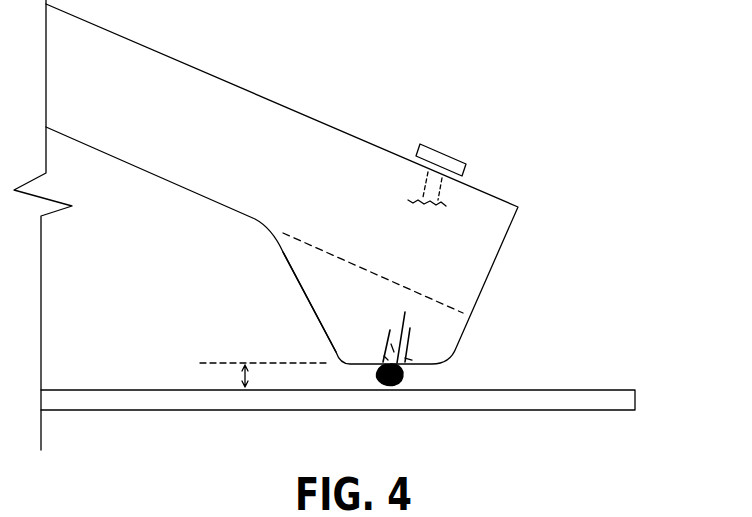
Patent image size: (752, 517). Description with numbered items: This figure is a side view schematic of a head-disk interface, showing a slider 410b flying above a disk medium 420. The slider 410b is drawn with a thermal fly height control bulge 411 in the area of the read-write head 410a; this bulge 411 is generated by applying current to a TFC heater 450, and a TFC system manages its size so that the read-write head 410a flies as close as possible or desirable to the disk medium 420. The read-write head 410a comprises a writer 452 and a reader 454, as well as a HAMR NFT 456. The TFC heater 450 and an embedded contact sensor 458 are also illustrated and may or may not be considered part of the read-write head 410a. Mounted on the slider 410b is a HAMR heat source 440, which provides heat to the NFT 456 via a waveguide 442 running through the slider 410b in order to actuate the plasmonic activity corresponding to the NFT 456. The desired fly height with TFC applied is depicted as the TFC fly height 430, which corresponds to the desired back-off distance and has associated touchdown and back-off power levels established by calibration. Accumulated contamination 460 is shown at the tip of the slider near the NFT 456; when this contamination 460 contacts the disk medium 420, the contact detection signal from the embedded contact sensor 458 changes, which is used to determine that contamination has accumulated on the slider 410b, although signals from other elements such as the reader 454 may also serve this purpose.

The slider 410b is at (222, 105).
The read-write head 410a is at (380, 303).
The thermal fly height control bulge 411 is at (323, 298).
The disk medium 420 is at (636, 402).
The TFC fly height 430 is at (243, 368).
The HAMR heat source 440 is at (460, 158).
The waveguide 442 is at (423, 183).
The TFC heater 450 is at (406, 322).
The writer 452 is at (407, 343).
The reader 454 is at (385, 342).
The HAMR NFT 456 is at (386, 355).
The embedded contact sensor 458 is at (411, 363).
The accumulated contamination 460 is at (398, 386).